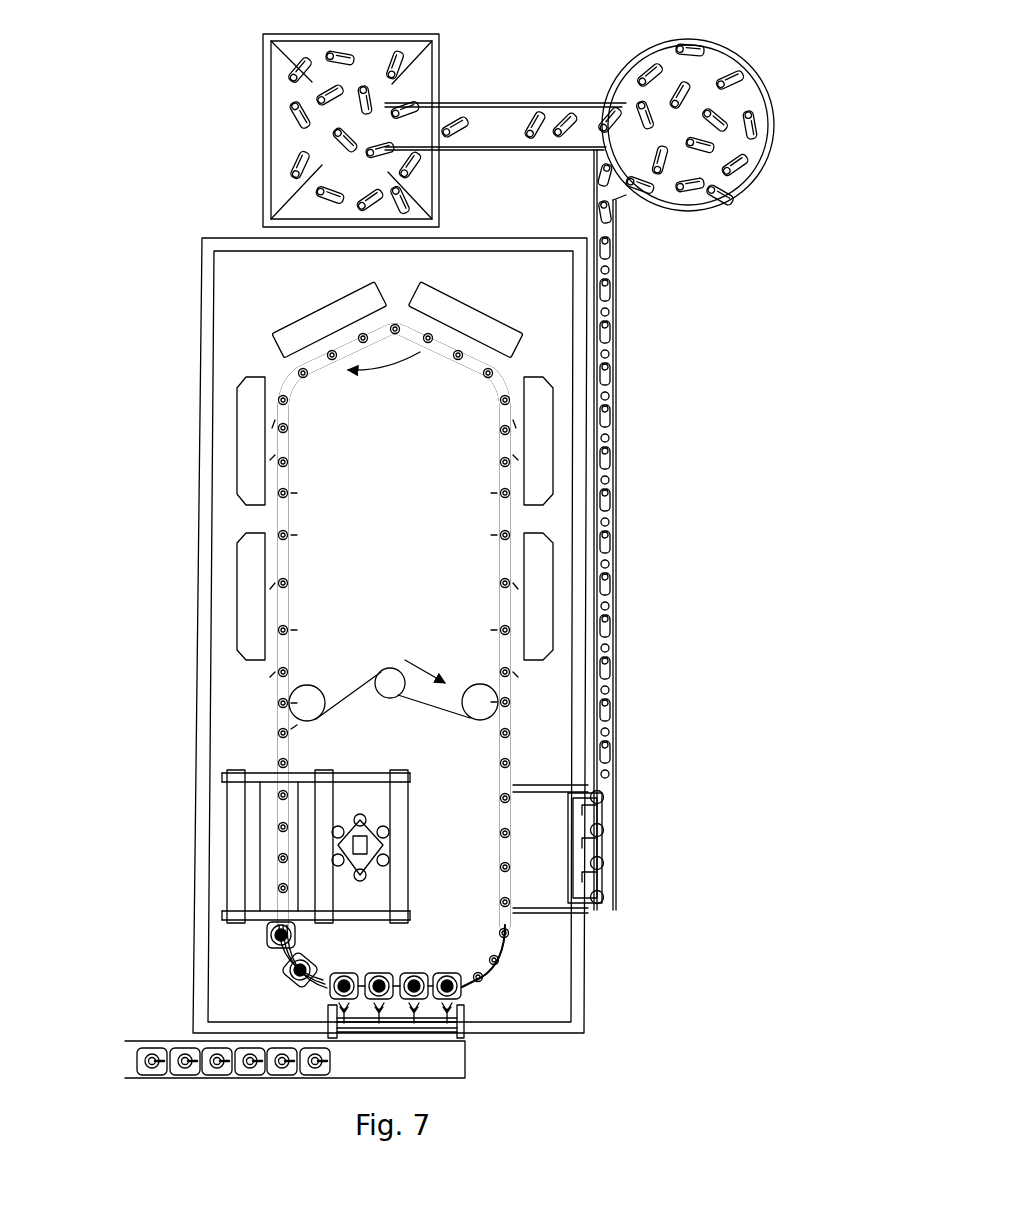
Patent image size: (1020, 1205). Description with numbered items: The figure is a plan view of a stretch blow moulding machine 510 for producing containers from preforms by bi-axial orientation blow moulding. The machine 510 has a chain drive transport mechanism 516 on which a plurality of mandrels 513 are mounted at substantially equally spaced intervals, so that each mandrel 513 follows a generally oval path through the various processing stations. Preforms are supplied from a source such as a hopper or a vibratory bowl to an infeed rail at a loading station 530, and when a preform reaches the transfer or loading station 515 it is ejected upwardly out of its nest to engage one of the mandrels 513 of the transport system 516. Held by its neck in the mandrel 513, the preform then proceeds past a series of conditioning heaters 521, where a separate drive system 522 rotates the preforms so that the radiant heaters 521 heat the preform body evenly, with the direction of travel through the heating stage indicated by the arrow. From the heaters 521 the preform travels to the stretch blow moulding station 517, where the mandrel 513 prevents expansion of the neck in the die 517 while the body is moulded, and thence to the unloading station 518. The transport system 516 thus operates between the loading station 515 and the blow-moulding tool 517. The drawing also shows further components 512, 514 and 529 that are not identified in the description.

The stretch blow moulding machine 510 is at (172, 265).
The holders 512 is at (414, 972).
The mandrel 513 is at (500, 960).
The carrier 514 is at (275, 733).
The loading station 515 is at (613, 847).
The chain drive transport mechanism 516 is at (457, 375).
The stretch blow moulding station 517 is at (227, 847).
The unloading station 518 is at (428, 952).
The conditioning heaters 521 is at (330, 318).
The separate drive system 522 is at (350, 693).
The output tray 529 is at (458, 1010).
The loading station 530 is at (626, 208).